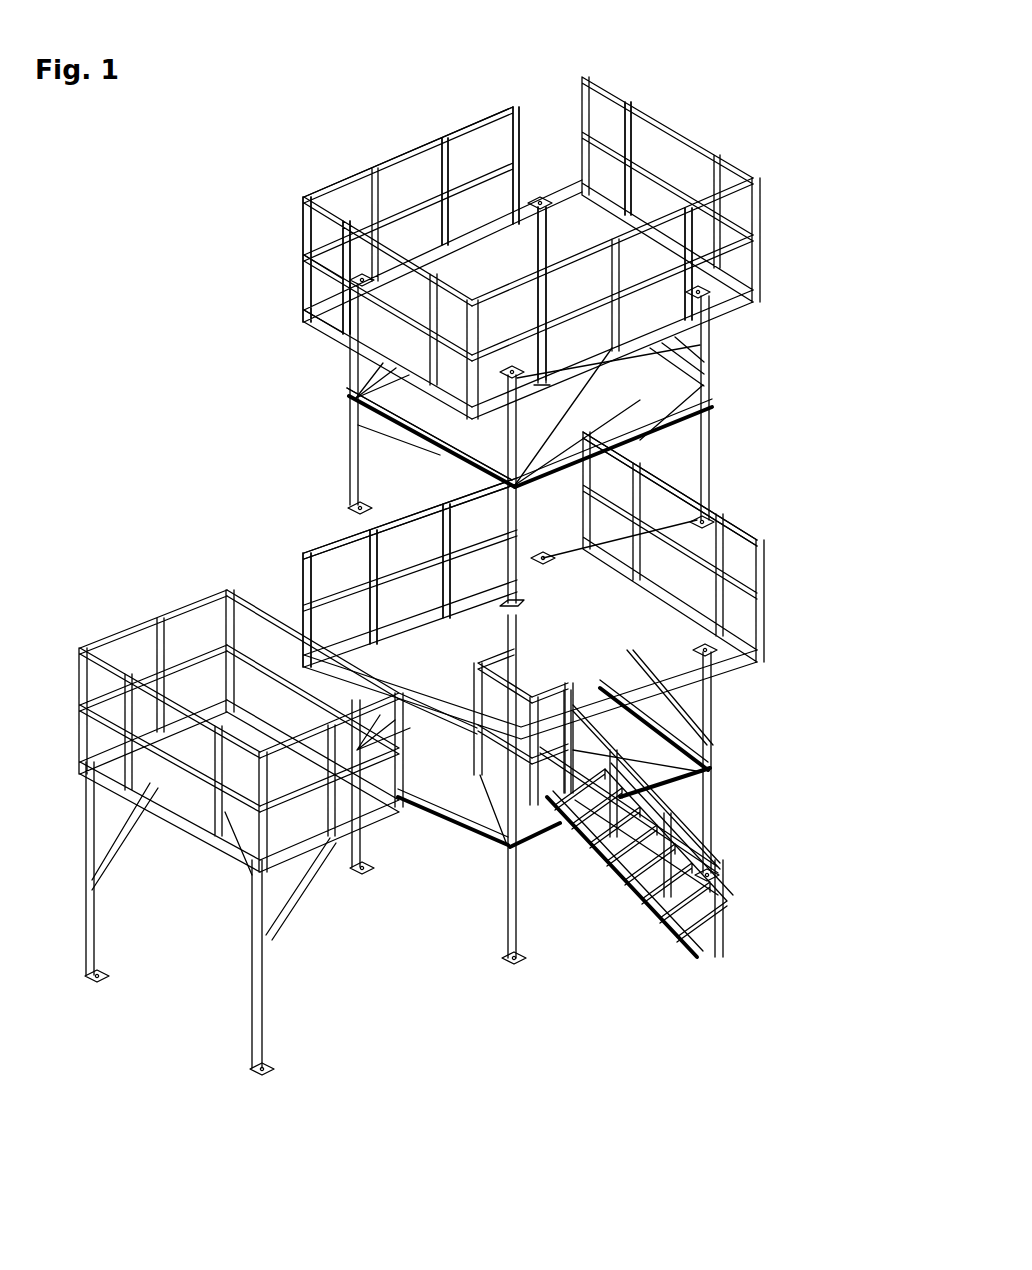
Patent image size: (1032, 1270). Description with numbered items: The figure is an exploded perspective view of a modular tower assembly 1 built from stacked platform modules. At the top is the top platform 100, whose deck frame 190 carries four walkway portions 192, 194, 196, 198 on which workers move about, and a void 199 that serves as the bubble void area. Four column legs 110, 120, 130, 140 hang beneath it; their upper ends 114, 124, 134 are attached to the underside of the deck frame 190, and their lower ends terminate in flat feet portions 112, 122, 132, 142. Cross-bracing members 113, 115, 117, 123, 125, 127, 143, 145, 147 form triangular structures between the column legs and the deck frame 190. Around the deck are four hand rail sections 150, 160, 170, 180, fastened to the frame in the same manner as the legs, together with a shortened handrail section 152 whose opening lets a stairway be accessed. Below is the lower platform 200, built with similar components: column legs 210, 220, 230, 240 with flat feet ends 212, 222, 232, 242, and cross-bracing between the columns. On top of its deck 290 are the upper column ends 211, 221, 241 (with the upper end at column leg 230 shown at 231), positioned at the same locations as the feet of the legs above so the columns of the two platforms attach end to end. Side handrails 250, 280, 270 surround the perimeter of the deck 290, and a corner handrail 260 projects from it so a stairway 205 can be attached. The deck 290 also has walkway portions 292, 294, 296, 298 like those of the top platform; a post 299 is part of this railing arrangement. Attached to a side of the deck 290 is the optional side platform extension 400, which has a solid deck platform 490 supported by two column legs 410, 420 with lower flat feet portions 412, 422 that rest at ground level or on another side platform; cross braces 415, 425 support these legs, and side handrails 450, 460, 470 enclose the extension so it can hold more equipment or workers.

The tower assembly 1 is at (120, 175).
The top platform 100 is at (235, 225).
The column leg 110 is at (347, 378).
The lower flat foot portion 112 is at (358, 500).
The cross-bracing member 113 is at (370, 363).
The upper end 114 is at (326, 320).
The cross-bracing member 115 is at (373, 410).
The cross-bracing member 117 is at (380, 433).
The column leg 120 is at (506, 468).
The lower flat foot portion 122 is at (541, 560).
The cross-bracing member 123 is at (600, 370).
The upper end 124 is at (467, 447).
The cross-bracing member 125 is at (683, 423).
The cross-bracing member 127 is at (687, 390).
The column leg 130 is at (717, 457).
The lower flat foot portion 132 is at (717, 515).
The upper end 134 is at (717, 315).
The column leg 140 is at (556, 378).
The lower flat foot portion 142 is at (567, 430).
The cross-bracing member 143 is at (542, 198).
The cross-bracing member 145 is at (360, 193).
The cross-bracing member 147 is at (347, 227).
The hand rail section 150 is at (390, 157).
The shortened handrail section 152 is at (487, 108).
The hand rail section 160 is at (302, 272).
The hand rail section 170 is at (740, 260).
The hand rail section 180 is at (703, 140).
The deck frame 190 is at (377, 343).
The walkway portion 192 is at (608, 203).
The walkway portion 194 is at (707, 250).
The walkway portion 196 is at (318, 298).
The walkway portion 198 is at (468, 237).
The void 199 is at (495, 258).
The lower platform 200 is at (185, 520).
The stairway 205 is at (703, 943).
The column leg 210 is at (363, 843).
The upper column end 211 is at (298, 602).
The flat foot end 212 is at (370, 875).
The column leg 220 is at (525, 920).
The upper column end 221 is at (502, 843).
The flat foot end 222 is at (528, 964).
The column leg 230 is at (716, 820).
The connection plate 231 is at (713, 657).
The flat foot end 232 is at (712, 858).
The column leg 240 is at (462, 500).
The upper column end 241 is at (690, 498).
The flat foot end 242 is at (712, 778).
The side handrail 250 is at (330, 548).
The corner handrail 260 is at (551, 780).
The side handrail 270 is at (650, 678).
The side handrail 280 is at (766, 540).
The deck 290 is at (450, 813).
The walkway portion 292 is at (718, 635).
The walkway portion 294 is at (722, 752).
The walkway portion 296 is at (345, 660).
The walkway portion 298 is at (345, 537).
The railing post 299 is at (470, 570).
The side platform extension 400 is at (72, 695).
The column leg 410 is at (100, 930).
The lower flat foot portion 412 is at (112, 972).
The cross brace 415 is at (130, 823).
The column leg 420 is at (268, 998).
The lower flat foot portion 422 is at (270, 1067).
The cross brace 425 is at (283, 908).
The side handrail 450 is at (147, 623).
The side handrail 460 is at (83, 740).
The side handrail 470 is at (460, 760).
The solid deck platform 490 is at (243, 817).